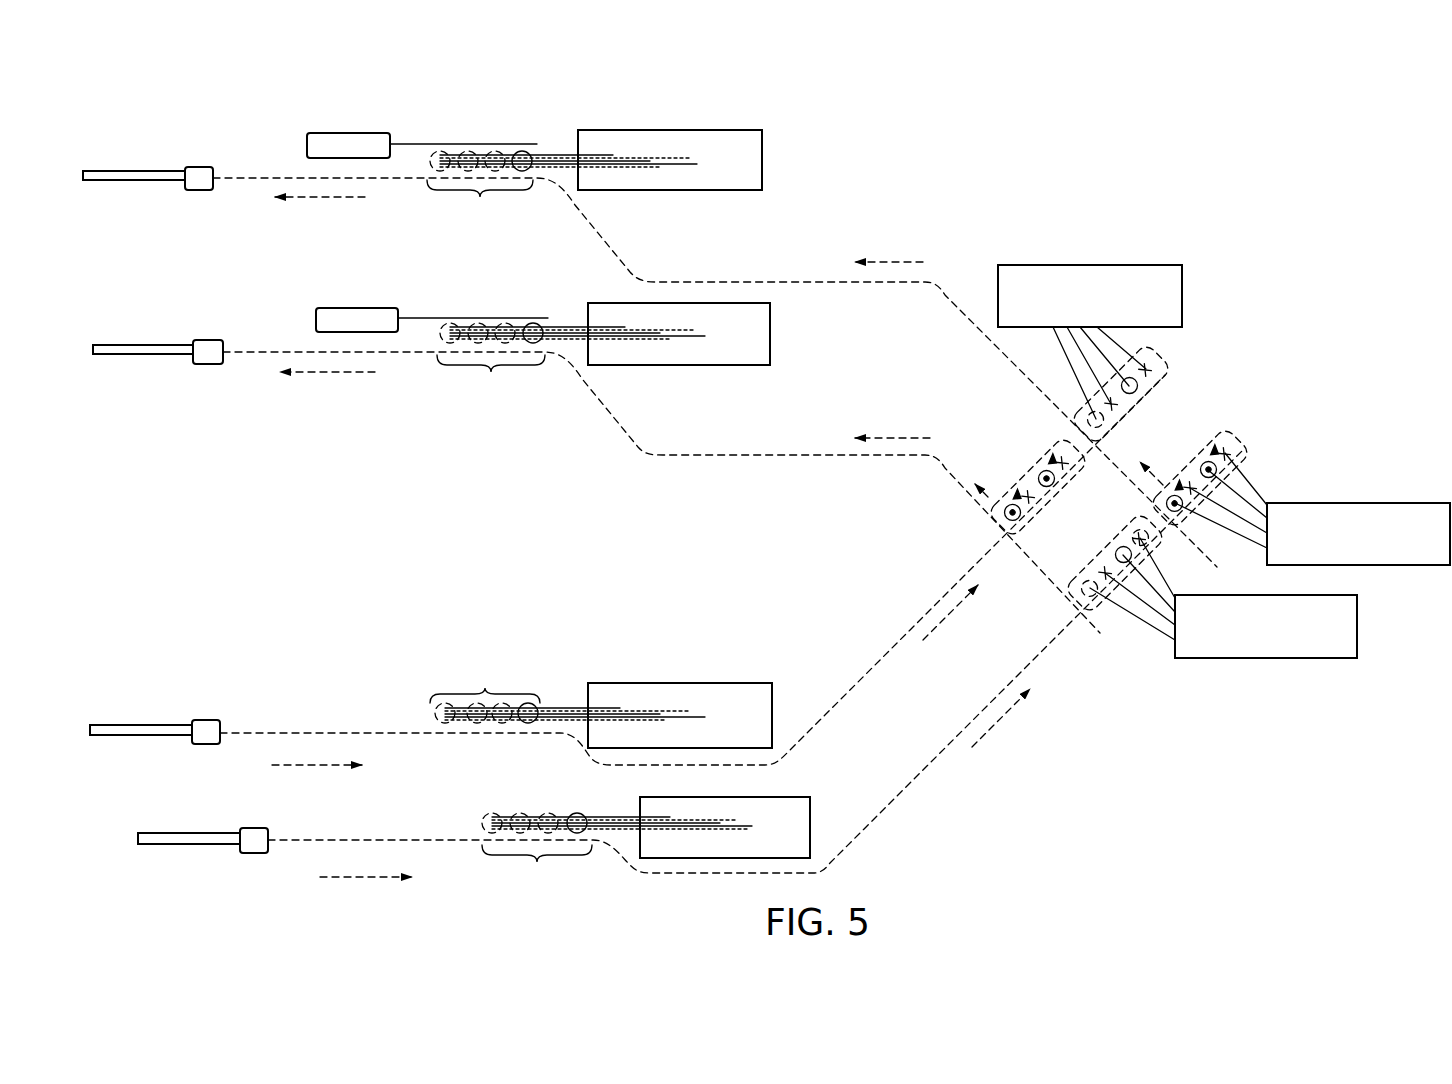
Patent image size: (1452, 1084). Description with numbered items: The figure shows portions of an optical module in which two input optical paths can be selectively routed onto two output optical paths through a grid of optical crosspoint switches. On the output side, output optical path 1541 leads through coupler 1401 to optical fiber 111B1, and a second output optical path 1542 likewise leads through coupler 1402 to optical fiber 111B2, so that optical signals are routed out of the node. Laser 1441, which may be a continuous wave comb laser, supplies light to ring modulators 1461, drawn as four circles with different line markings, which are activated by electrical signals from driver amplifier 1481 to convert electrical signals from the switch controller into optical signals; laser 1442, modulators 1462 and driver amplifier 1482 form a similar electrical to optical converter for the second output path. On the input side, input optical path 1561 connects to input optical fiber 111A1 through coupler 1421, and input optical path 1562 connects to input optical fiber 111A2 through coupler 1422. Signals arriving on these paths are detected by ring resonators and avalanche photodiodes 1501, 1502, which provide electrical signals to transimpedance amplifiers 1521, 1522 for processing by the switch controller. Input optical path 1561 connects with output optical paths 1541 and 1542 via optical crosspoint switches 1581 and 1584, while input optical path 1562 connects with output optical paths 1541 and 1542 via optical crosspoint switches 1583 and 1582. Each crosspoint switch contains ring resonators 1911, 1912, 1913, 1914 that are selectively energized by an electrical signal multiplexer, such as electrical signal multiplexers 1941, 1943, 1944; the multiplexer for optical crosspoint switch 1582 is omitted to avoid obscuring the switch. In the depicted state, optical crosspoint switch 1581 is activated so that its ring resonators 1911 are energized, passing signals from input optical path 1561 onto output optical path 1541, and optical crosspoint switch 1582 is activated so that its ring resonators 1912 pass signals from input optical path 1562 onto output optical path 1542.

The optical fiber 111B1 is at (111, 170).
The optical fiber 111B2 is at (120, 345).
The input optical fiber 111A1 is at (158, 833).
The input optical fiber 111A2 is at (124, 725).
The coupler 1401 is at (199, 167).
The coupler 1402 is at (207, 340).
The coupler 1421 is at (255, 856).
The coupler 1422 is at (208, 720).
The laser 1441 is at (341, 133).
The laser 1442 is at (337, 308).
The modulators 1461 is at (562, 192).
The modulators 1462 is at (571, 366).
The ring resonators and avalanche photodiodes 1501 is at (617, 856).
The ring resonators and avalanche photodiodes 1502 is at (567, 687).
The driver amplifier 1481 is at (665, 130).
The driver amplifier 1482 is at (771, 338).
The transimpedance amplifier 1521 is at (812, 800).
The transimpedance amplifier 1522 is at (700, 683).
The output optical path 1541 is at (612, 249).
The output optical path 1542 is at (620, 422).
The input optical path 1561 is at (375, 838).
The input optical path 1562 is at (328, 730).
The optical crosspoint switch 1581 is at (1265, 462).
The optical crosspoint switch 1582 is at (969, 425).
The optical crosspoint switch 1583 is at (1200, 273).
The optical crosspoint switch 1584 is at (1193, 697).
The ring resonators 1911 is at (1256, 390).
The ring resonators 1912 is at (1065, 478).
The ring resonators 1913 is at (1182, 352).
The ring resonators 1914 is at (1128, 648).
The electrical signal multiplexer 1941 is at (1378, 503).
The electrical signal multiplexer 1943 is at (1083, 265).
The electrical signal multiplexer 1944 is at (1358, 622).